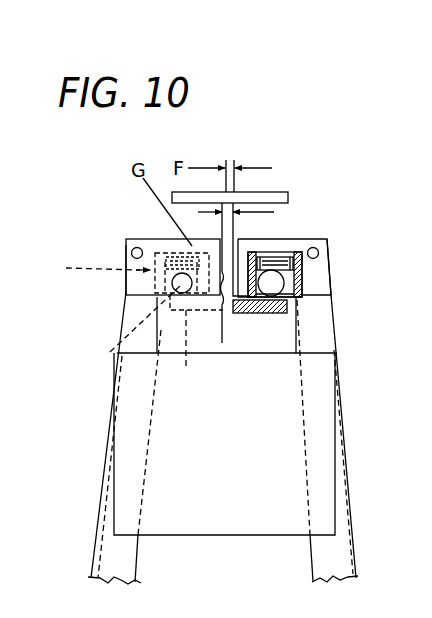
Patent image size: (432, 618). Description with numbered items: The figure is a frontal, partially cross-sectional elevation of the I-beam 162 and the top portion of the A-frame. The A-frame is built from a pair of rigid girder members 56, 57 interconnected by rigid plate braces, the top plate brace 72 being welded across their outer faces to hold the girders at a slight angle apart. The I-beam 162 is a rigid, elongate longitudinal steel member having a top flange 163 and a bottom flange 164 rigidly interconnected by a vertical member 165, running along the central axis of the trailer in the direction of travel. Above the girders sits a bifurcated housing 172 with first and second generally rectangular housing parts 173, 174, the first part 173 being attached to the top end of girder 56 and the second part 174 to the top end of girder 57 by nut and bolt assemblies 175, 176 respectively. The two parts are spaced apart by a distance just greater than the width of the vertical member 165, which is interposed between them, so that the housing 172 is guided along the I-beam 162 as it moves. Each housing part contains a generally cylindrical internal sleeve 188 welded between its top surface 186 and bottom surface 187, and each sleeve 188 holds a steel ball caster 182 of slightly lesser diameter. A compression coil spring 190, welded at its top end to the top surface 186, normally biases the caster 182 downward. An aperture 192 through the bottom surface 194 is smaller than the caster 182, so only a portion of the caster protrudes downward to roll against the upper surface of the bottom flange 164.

The girder member 56 is at (138, 321).
The girder member 57 is at (320, 338).
The plate brace 72 is at (167, 438).
The I-beam 162 is at (242, 314).
The top flange 163 is at (279, 195).
The bottom flange 164 is at (224, 441).
The vertical member 165 is at (273, 245).
The bifurcated housing 172 is at (91, 265).
The first housing part 173 is at (156, 249).
The second housing part 174 is at (318, 253).
The nut and bolt assembly 175 is at (149, 246).
The nut and bolt assembly 176 is at (330, 262).
The ball caster 182 is at (110, 352).
The top surface 186 is at (158, 247).
The bottom surface 187 is at (296, 296).
The internal sleeve 188 is at (121, 283).
The compression coil spring 190 is at (317, 268).
The aperture 192 is at (257, 312).
The bottom surface 194 is at (138, 297).